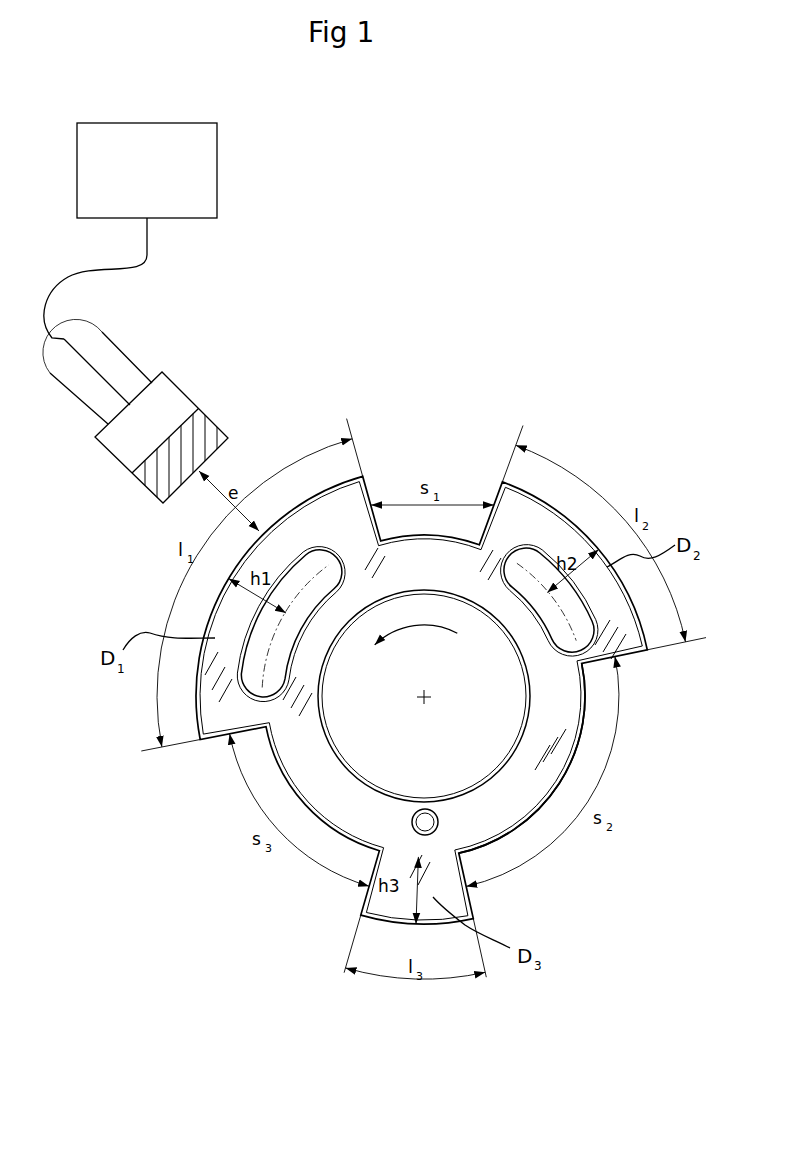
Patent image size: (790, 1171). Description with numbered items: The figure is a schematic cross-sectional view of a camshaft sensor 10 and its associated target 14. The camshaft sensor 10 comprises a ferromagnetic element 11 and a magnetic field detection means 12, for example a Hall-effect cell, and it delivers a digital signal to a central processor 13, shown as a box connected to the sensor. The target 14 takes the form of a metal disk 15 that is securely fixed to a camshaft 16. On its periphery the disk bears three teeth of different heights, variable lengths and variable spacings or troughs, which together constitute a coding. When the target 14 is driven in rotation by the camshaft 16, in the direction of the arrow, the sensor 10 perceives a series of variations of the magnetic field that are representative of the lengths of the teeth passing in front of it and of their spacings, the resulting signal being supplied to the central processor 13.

The camshaft sensor 10 is at (175, 360).
The ferromagnetic element 11 is at (185, 408).
The magnetic field detection means 12 is at (132, 447).
The central processor 13 is at (197, 190).
The target 14 is at (428, 709).
The metal disk 15 is at (577, 747).
The camshaft 16 is at (423, 698).